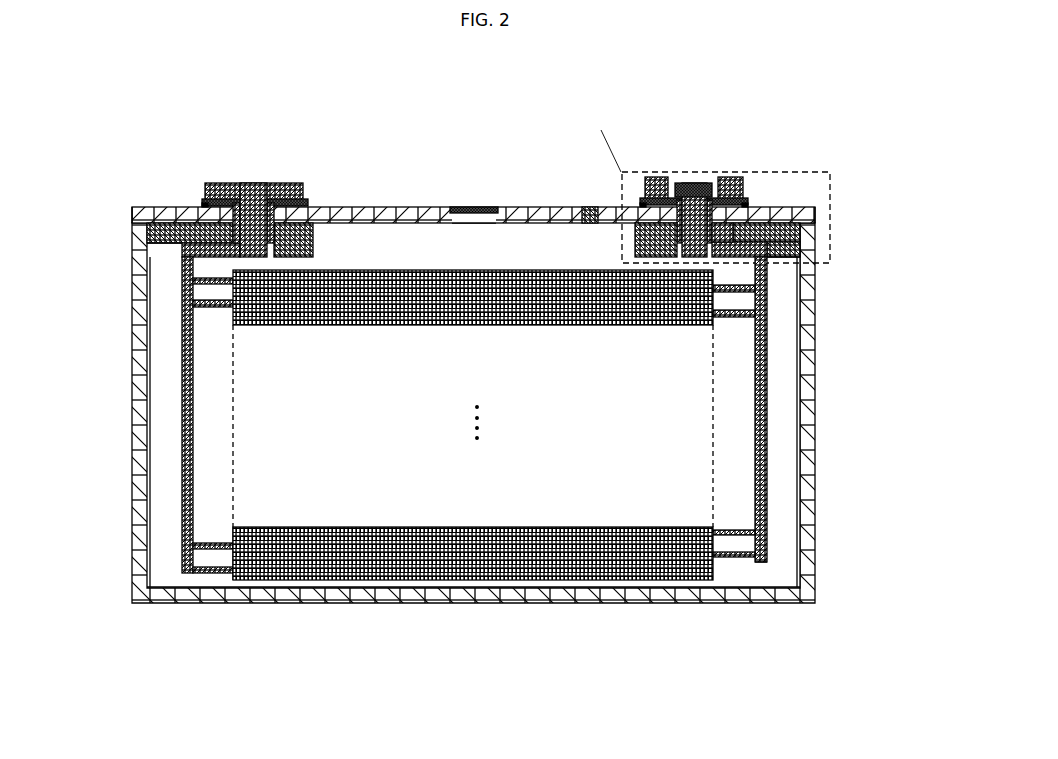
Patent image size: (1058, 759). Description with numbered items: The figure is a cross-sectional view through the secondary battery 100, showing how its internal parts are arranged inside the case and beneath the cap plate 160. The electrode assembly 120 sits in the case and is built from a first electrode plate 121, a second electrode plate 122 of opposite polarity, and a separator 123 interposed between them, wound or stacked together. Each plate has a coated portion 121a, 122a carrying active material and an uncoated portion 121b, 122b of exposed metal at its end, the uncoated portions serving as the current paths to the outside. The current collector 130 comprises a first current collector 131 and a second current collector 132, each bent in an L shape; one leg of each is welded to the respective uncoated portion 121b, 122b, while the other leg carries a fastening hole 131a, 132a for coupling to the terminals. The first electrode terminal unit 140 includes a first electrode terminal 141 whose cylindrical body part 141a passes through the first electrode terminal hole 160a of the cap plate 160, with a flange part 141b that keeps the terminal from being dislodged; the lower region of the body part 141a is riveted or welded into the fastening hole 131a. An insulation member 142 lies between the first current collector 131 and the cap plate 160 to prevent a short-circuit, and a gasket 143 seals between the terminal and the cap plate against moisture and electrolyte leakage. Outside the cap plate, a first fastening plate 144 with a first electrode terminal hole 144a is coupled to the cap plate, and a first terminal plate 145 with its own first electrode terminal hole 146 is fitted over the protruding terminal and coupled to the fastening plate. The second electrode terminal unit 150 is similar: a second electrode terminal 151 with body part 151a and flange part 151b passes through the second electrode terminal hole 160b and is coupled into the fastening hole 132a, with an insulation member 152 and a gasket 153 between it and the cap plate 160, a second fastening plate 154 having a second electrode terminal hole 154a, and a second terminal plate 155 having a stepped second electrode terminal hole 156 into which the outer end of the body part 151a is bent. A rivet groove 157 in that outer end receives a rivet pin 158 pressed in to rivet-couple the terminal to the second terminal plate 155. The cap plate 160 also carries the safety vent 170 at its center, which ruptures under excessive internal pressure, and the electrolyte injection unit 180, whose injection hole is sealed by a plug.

The secondary battery 100 is at (100, 93).
The electrode assembly 120 is at (565, 583).
The first electrode plate 121 is at (372, 582).
The coated portion 121a is at (275, 580).
The uncoated portion 121b is at (210, 575).
The second electrode plate 122 is at (636, 578).
The coated portion 122a is at (692, 560).
The uncoated portion 122b is at (748, 565).
The separator 123 is at (492, 570).
The current collector 130 is at (539, 422).
The first current collector 131 is at (195, 482).
The fastening hole 131a is at (182, 248).
The second current collector 132 is at (763, 432).
The fastening hole 132a is at (800, 257).
The first electrode terminal unit 140 is at (246, 189).
The first electrode terminal 141 is at (306, 247).
The body part 141a is at (265, 257).
The flange part 141b is at (282, 240).
The insulation member 142 is at (155, 230).
The gasket 143 is at (298, 217).
The first fastening plate 144 is at (202, 212).
The first electrode terminal hole 144a is at (203, 203).
The first terminal plate 145 is at (255, 173).
The first electrode terminal hole 146 is at (292, 199).
The second electrode terminal unit 150 is at (696, 184).
The second electrode terminal 151 is at (634, 247).
The body part 151a is at (637, 228).
The flange part 151b is at (634, 249).
The insulation member 152 is at (795, 230).
The gasket 153 is at (758, 218).
The second fastening plate 154 is at (745, 200).
The second electrode terminal hole 154a is at (752, 206).
The second terminal plate 155 is at (730, 177).
The second electrode terminal hole 156 is at (655, 178).
The rivet groove 157 is at (783, 240).
The rivet pin 158 is at (690, 185).
The cap plate 160 is at (538, 207).
The first electrode terminal hole 160a is at (162, 208).
The second electrode terminal hole 160b is at (805, 210).
The safety vent 170 is at (456, 207).
The electrolyte injection unit 180 is at (590, 207).